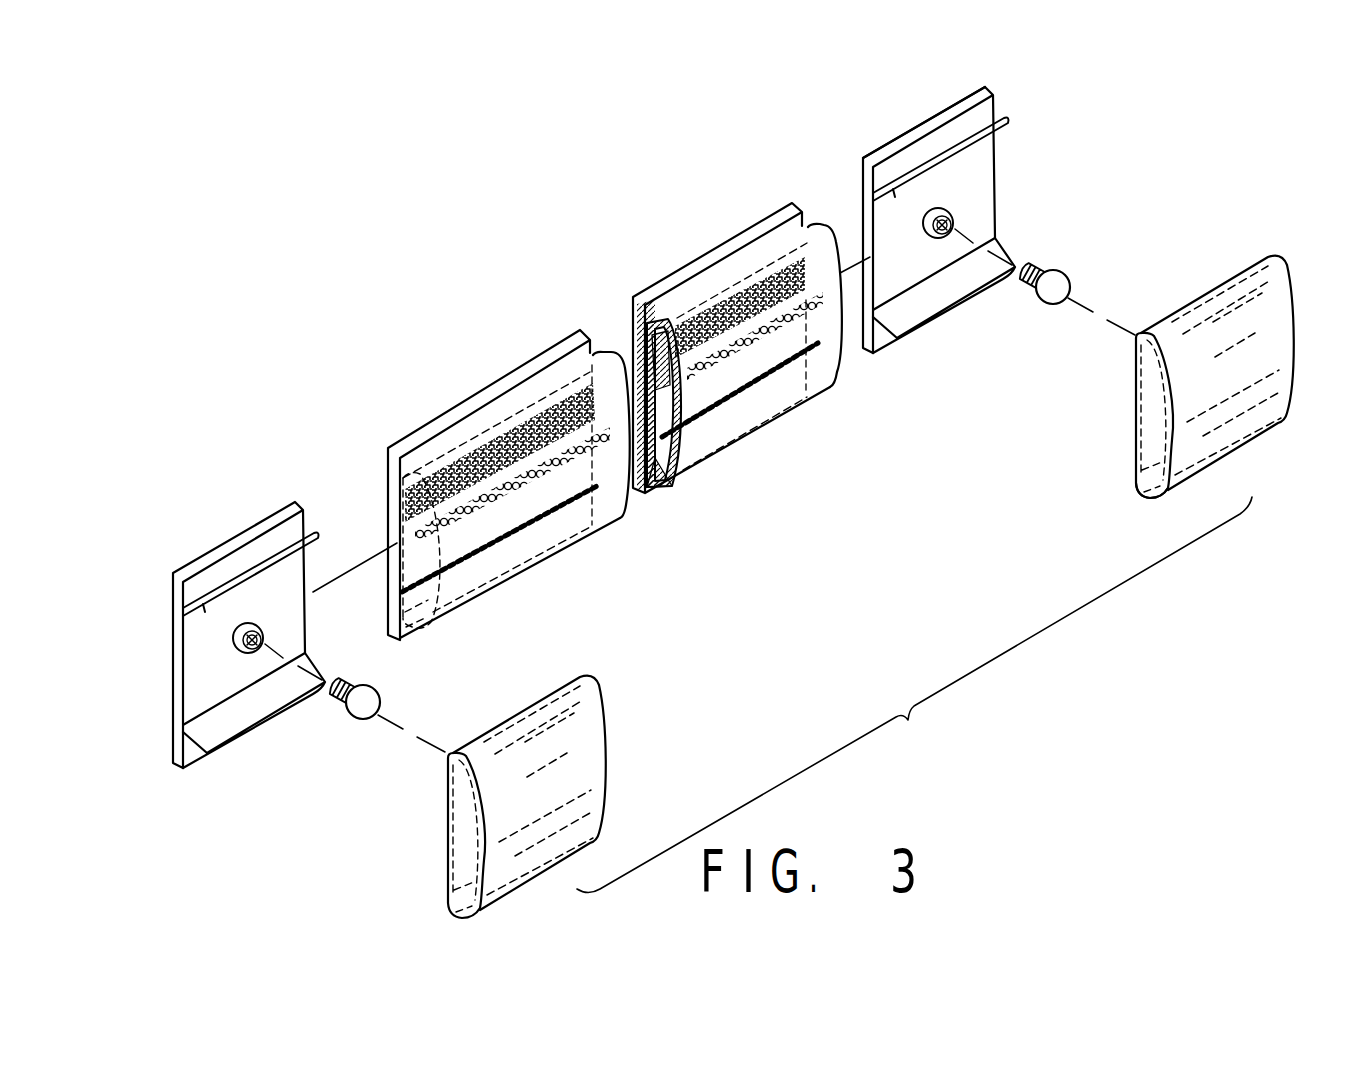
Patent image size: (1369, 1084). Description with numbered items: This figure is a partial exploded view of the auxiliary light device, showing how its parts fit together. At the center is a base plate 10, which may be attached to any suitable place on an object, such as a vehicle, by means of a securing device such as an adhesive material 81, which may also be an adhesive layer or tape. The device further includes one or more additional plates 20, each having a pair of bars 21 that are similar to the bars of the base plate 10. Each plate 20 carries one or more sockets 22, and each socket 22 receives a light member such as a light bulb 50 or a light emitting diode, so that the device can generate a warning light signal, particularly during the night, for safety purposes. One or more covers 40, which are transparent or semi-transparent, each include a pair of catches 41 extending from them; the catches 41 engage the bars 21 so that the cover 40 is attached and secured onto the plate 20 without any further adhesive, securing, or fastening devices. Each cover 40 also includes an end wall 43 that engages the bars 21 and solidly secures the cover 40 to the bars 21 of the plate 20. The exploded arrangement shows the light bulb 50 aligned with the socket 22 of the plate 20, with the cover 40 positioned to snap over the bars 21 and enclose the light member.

The plate 10 is at (523, 373).
The plate 20 is at (987, 107).
The bars 21 is at (1007, 123).
The socket 22 is at (953, 217).
The cover 40 is at (823, 377).
The catches 41 is at (1148, 494).
The end wall 43 is at (1150, 385).
The light bulb 50 is at (1069, 278).
The adhesive material 81 is at (872, 149).